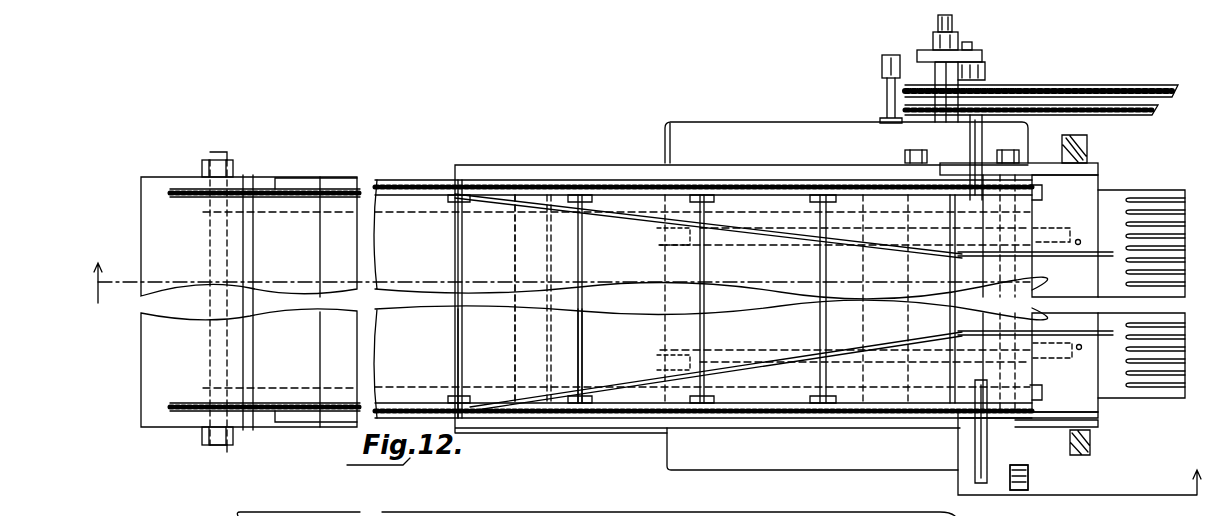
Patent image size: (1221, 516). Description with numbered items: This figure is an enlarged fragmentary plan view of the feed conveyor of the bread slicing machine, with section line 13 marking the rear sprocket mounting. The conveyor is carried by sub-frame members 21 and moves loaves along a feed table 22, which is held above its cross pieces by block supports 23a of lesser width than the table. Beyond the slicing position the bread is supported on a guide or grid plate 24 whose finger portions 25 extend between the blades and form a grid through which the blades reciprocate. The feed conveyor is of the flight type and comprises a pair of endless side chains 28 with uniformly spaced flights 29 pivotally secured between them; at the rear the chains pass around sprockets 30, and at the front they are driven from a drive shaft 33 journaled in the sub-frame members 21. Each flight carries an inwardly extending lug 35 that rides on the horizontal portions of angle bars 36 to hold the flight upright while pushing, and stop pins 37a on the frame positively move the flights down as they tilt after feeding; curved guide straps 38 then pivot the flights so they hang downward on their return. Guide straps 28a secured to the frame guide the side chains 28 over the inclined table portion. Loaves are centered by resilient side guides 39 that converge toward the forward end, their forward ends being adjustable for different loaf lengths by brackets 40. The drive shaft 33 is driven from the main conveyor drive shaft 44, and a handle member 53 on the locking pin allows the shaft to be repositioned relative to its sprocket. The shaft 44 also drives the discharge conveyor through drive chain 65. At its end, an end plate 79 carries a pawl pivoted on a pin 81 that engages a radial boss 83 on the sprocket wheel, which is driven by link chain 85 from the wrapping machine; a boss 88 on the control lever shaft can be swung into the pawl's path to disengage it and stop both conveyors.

The section line 13 is at (643, 379).
The sub-frame members 21 is at (690, 130).
The feed table 22 is at (598, 336).
The block supports 23a is at (512, 337).
The guide or grid plate 24 is at (1112, 192).
The finger portions 25 is at (1155, 200).
The side chains 28 is at (612, 225).
The guide straps 28a is at (958, 166).
The flights 29 is at (462, 373).
The sprockets 30 is at (169, 196).
The drive shaft 33 is at (1018, 275).
The lug 35 is at (480, 210).
The angle bars 36 is at (398, 212).
The stop pins 37a is at (1040, 200).
The curved guide straps 38 is at (782, 250).
The side guides 39 is at (745, 236).
The adjustable brackets 40 is at (988, 140).
The main conveyor drive shaft 44 is at (936, 22).
The handle member 53 is at (1030, 486).
The drive chain 65 is at (1125, 116).
The end plate 79 is at (922, 50).
The pin 81 is at (972, 42).
The radial boss 83 is at (985, 68).
The link chain 85 is at (1098, 86).
The boss 88 is at (882, 60).